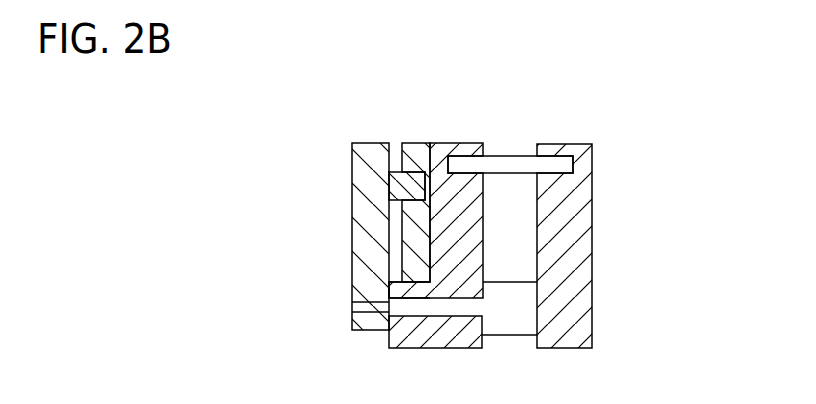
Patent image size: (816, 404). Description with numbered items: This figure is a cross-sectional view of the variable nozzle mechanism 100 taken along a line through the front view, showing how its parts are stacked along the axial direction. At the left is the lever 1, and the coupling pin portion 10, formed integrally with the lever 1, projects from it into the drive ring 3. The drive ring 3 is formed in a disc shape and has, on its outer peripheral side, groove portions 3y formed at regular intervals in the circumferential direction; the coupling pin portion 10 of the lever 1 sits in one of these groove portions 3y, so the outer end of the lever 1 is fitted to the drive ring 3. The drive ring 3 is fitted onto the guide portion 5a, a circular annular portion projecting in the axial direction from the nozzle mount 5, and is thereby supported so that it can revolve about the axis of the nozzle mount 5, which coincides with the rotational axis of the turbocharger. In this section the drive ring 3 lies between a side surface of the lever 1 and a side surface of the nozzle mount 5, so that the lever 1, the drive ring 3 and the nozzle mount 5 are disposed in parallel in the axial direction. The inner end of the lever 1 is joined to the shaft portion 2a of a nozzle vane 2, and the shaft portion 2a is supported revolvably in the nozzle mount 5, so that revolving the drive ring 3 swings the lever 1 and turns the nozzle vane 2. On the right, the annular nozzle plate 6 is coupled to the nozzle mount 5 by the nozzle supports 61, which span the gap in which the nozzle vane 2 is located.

The variable nozzle mechanism 100 is at (628, 97).
The lever 1 is at (352, 193).
The coupling pin portion 10 is at (403, 188).
The drive ring 3 is at (432, 130).
The groove portion 3y is at (412, 142).
The nozzle mount 5 is at (452, 142).
The guide portion 5a is at (407, 283).
The nozzle support 61 is at (503, 153).
The nozzle plate 6 is at (570, 143).
The shaft portion 2a is at (423, 327).
The nozzle vane 2 is at (500, 338).